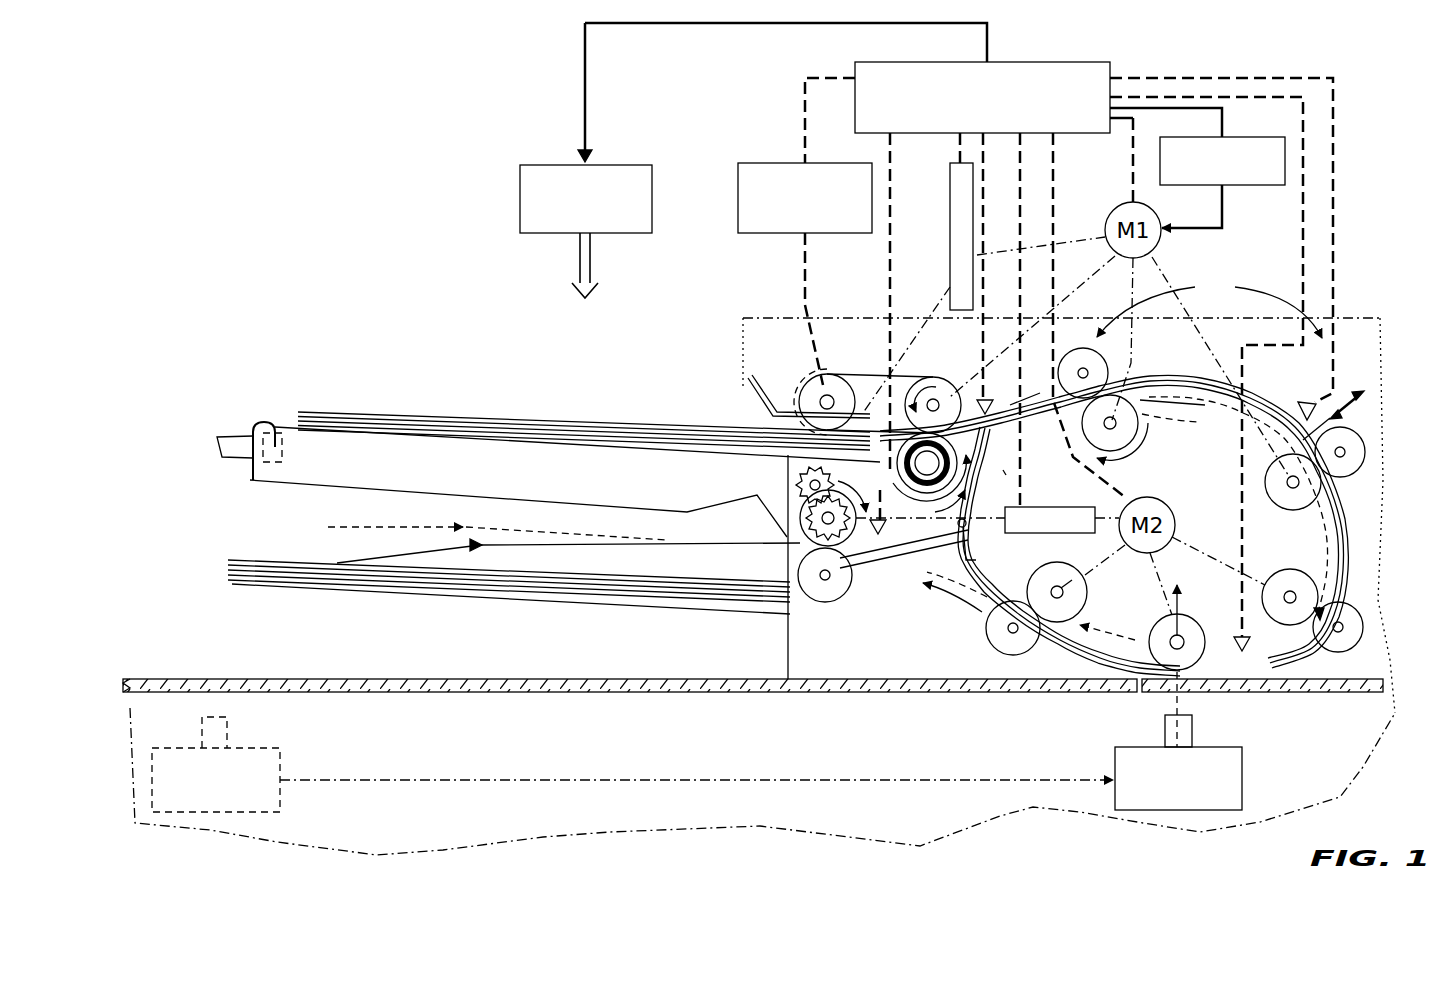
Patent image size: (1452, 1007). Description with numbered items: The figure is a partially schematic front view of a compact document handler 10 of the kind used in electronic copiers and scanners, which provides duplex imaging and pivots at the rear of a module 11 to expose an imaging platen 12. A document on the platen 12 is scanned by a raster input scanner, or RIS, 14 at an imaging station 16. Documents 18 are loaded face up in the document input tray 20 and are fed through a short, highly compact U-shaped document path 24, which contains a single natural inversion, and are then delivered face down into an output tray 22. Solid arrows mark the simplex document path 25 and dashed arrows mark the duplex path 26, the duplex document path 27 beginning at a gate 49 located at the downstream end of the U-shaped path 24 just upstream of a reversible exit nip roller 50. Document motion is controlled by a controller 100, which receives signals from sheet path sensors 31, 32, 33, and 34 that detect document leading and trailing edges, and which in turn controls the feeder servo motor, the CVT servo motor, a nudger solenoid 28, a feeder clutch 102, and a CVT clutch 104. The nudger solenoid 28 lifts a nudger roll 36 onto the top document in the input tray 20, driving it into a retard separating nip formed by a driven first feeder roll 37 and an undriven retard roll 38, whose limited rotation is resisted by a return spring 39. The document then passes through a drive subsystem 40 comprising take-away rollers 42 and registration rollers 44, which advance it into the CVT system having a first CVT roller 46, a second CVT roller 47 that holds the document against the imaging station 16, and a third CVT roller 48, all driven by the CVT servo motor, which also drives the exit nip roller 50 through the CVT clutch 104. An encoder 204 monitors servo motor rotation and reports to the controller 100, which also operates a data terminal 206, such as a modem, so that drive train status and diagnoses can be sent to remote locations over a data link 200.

The document handler 10 is at (398, 255).
The module 11 is at (1065, 823).
The imaging platen 12 is at (527, 693).
The raster input scanner 14 is at (1228, 772).
The imaging station 16 is at (1213, 708).
The documents 18 is at (428, 413).
The document input tray 20 is at (353, 438).
The output tray 22 is at (403, 585).
The U-shaped document path 24 is at (1365, 555).
The simplex document path 25 is at (1157, 393).
The duplex path 26 is at (437, 527).
The duplex document path 27 is at (1003, 472).
The nudger solenoid 28 is at (738, 198).
The sheet path sensor 31 is at (989, 400).
The sheet path sensor 32 is at (1300, 410).
The sheet path sensor 33 is at (1238, 650).
The sheet path sensor 34 is at (888, 540).
The nudger roll 36 is at (806, 398).
The first feeder roll 37 is at (946, 392).
The retard roll 38 is at (927, 476).
The return spring 39 is at (922, 487).
The drive subsystem 40 is at (1209, 305).
The take-away rollers 42 is at (1125, 440).
The registration rollers 44 is at (1266, 490).
The first CVT roller 46 is at (1273, 580).
The second CVT roller 47 is at (1180, 605).
The third CVT roller 48 is at (1089, 588).
The gate 49 is at (980, 553).
The reversible exit nip roller 50 is at (800, 505).
The controller 100 is at (1068, 62).
The feeder clutch 102 is at (948, 205).
The CVT clutch 104 is at (1045, 535).
The data link 200 is at (592, 252).
The encoder 204 is at (1260, 185).
The data terminal 206 is at (520, 198).